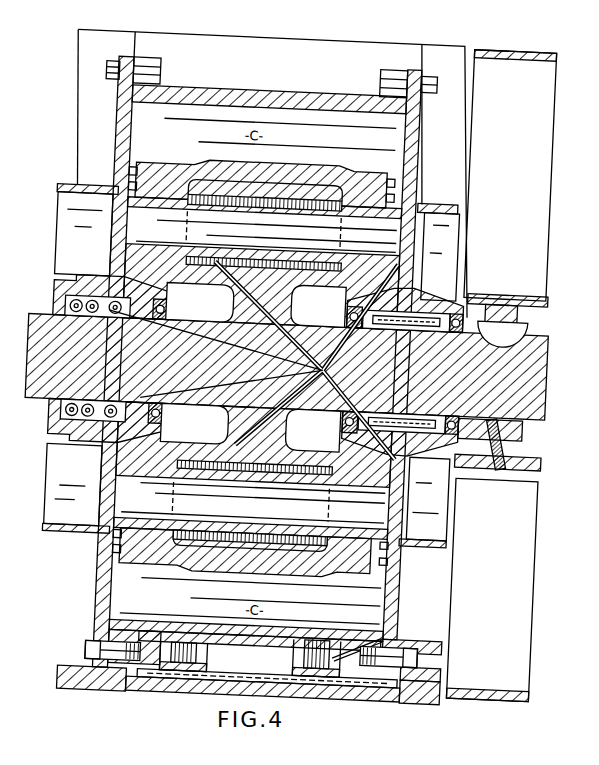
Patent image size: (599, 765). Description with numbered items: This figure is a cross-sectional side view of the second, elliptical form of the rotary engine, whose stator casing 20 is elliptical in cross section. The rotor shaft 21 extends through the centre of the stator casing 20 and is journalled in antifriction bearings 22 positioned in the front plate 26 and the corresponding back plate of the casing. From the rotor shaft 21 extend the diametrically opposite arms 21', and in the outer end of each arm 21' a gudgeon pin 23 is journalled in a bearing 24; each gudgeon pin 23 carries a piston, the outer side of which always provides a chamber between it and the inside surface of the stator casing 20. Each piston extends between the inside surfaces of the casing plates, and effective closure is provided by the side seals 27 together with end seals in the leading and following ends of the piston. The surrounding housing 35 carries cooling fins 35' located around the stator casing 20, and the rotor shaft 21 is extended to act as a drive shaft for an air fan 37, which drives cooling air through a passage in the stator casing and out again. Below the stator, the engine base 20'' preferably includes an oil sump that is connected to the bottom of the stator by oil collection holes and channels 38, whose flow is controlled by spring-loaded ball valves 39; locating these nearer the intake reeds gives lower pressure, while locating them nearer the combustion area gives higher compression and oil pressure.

The casing 20 is at (269, 89).
The engine base 20'' is at (95, 644).
The shaft 21 is at (286, 357).
The arms 21' is at (202, 364).
The antifriction bearings 22 is at (93, 283).
The gudgeon pin 23 is at (261, 230).
The bearing 24 is at (323, 270).
The front plate 26 is at (113, 137).
The side seals 27 is at (121, 170).
The housing 35 is at (272, 173).
The cooling fins 35' is at (265, 359).
The air fan 37 is at (511, 496).
The oil collection holes and channels 38 is at (300, 645).
The spring-loaded ball valves 39 is at (296, 663).